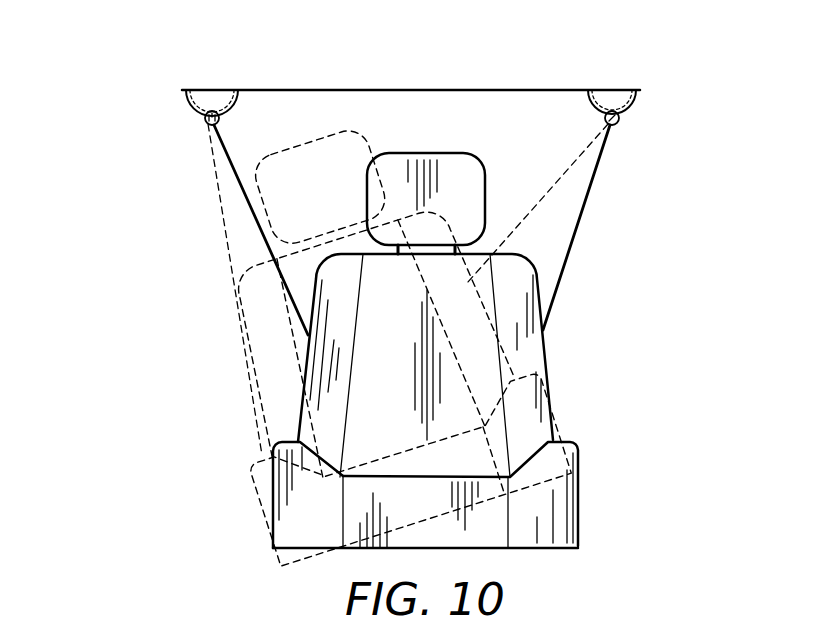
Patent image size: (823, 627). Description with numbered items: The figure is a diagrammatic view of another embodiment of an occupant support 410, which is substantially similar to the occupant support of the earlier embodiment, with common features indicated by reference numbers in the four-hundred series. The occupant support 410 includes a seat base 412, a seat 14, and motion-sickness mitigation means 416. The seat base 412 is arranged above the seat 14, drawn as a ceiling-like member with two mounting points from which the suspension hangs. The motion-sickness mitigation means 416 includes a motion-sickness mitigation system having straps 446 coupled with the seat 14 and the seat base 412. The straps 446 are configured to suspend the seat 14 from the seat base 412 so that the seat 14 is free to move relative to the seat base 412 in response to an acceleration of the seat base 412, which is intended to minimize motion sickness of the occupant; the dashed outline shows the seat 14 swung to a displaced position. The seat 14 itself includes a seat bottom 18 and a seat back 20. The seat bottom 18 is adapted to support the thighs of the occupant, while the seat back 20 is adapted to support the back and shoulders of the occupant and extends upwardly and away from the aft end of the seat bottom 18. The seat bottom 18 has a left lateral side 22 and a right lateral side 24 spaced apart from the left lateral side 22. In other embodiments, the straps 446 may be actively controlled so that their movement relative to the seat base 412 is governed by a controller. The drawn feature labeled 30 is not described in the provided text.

The occupant support 410 is at (146, 100).
The seat base 412 is at (647, 101).
The motion-sickness mitigation means 416 is at (580, 234).
The strap 446 is at (253, 212).
The seat 14 is at (562, 356).
The seat back 20 is at (427, 364).
The seat bottom 18 is at (584, 493).
The left lateral side 22 is at (584, 543).
The seat side 30 is at (367, 475).
The right lateral side 24 is at (266, 487).